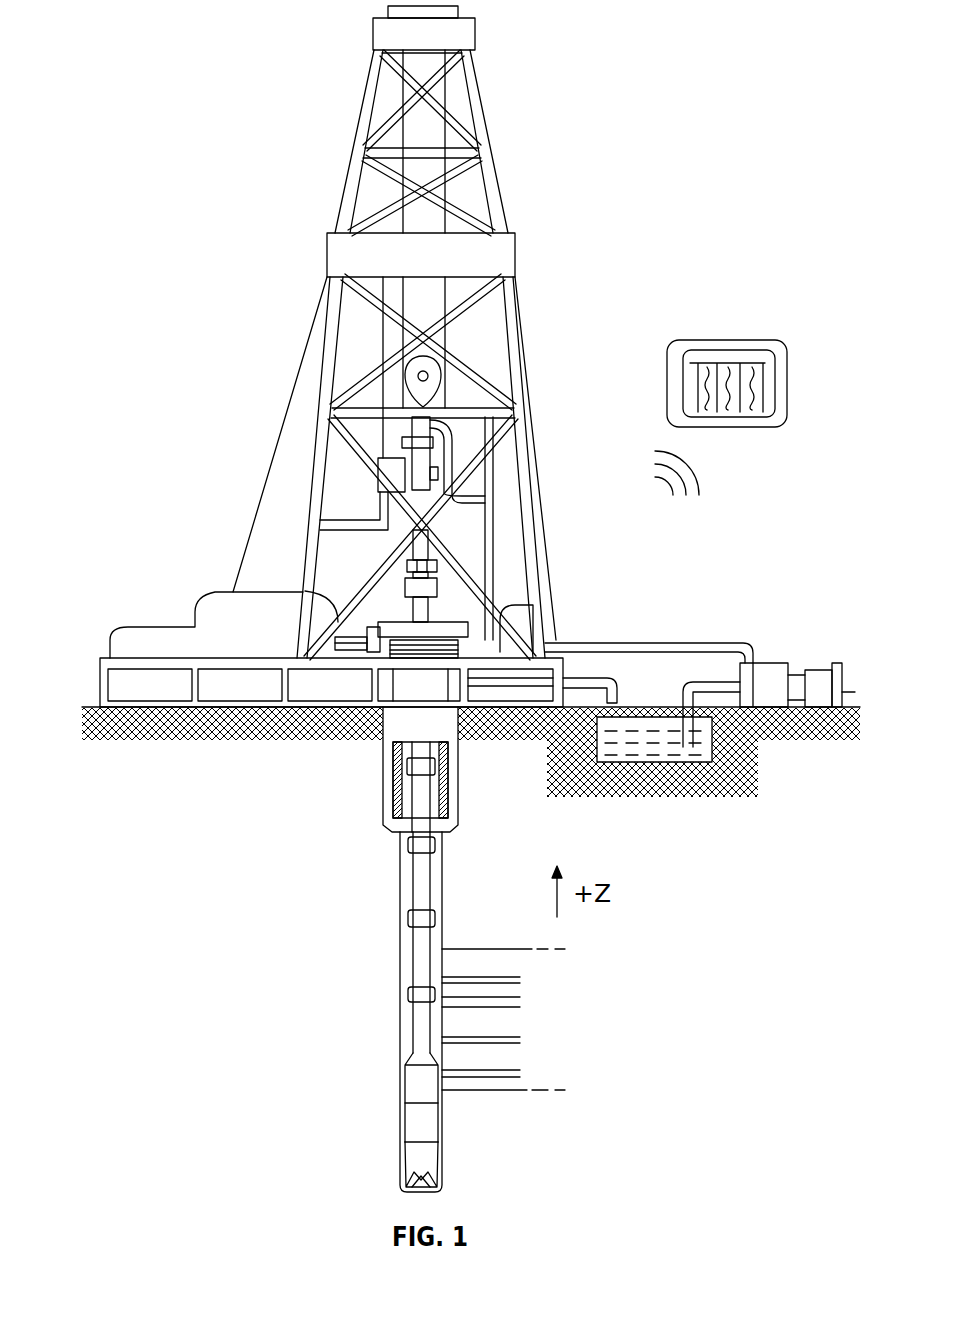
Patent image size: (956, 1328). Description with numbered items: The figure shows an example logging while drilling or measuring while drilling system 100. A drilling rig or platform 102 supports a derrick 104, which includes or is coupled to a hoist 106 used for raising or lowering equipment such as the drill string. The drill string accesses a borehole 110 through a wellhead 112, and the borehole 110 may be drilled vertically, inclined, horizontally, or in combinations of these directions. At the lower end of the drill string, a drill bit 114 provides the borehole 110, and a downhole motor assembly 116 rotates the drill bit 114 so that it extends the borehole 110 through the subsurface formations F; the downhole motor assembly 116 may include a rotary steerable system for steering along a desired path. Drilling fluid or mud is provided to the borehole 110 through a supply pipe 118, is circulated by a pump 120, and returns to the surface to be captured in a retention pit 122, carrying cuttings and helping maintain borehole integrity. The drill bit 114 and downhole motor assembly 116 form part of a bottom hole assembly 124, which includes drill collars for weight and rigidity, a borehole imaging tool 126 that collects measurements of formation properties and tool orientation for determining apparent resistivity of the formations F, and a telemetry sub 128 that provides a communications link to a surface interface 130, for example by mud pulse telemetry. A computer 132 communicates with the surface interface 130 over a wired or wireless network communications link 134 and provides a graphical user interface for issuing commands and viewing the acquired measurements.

The logging while drilling or measuring while drilling system 100 is at (218, 66).
The drilling rig or platform 102 is at (93, 677).
The derrick 104 is at (493, 192).
The hoist 106 is at (447, 377).
The borehole 110 is at (443, 918).
The wellhead 112 is at (468, 630).
The drill bit 114 is at (437, 1180).
The downhole motor assembly 116 is at (415, 1160).
The supply pipe 118 is at (705, 643).
The pump 120 is at (777, 663).
The retention pit 122 is at (640, 737).
The bottom hole assembly 124 is at (402, 1078).
The borehole imaging tool 126 is at (432, 1132).
The telemetry sub 128 is at (415, 1092).
The surface interface 130 is at (438, 565).
The computer 132 is at (738, 337).
The network communications link 134 is at (698, 488).
The subsurface formations F is at (565, 949).